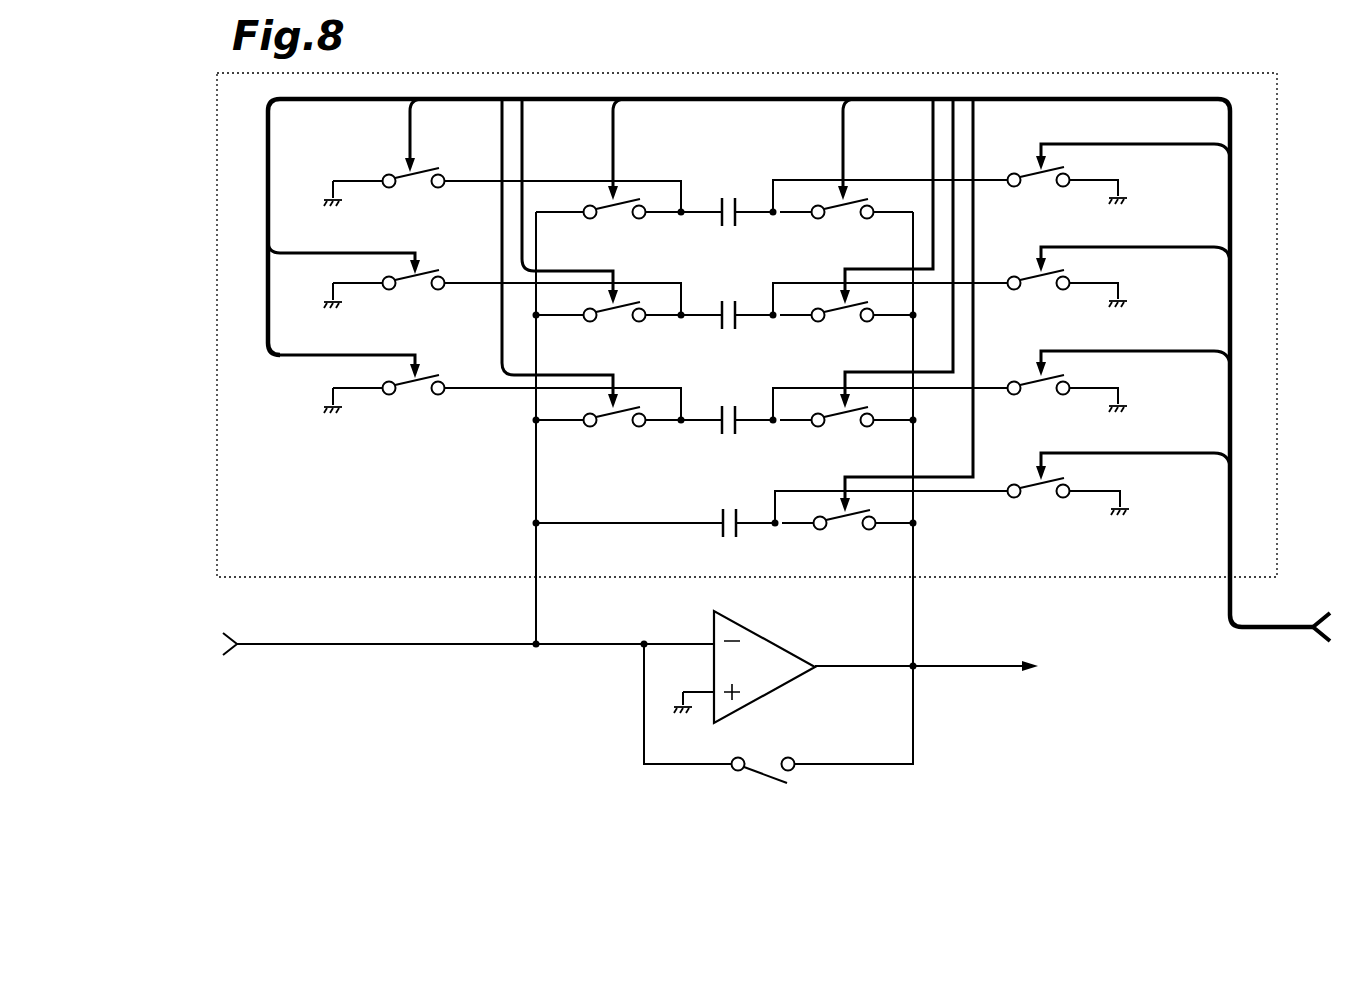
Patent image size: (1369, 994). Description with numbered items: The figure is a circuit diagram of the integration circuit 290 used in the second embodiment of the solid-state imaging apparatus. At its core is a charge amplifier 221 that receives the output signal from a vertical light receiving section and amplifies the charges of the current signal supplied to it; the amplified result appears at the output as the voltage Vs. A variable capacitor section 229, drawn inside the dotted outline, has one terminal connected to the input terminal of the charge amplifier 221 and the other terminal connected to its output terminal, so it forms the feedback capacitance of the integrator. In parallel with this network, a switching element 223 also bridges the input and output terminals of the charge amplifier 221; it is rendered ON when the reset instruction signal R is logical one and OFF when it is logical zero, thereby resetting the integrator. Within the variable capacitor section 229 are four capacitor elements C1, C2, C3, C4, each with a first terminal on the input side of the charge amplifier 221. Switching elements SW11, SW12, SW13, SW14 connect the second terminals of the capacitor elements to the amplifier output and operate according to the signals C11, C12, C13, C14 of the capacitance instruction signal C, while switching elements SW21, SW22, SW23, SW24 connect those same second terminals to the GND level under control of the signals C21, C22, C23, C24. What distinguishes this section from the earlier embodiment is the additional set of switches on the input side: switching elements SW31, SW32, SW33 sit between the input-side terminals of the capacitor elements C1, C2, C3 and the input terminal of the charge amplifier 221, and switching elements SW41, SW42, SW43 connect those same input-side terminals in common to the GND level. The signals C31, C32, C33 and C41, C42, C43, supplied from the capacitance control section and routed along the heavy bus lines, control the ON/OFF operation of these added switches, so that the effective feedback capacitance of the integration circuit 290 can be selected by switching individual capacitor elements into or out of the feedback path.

The integration circuit 290 is at (350, 806).
The variable capacitor section 229 is at (1278, 325).
The charge amplifier 221 is at (770, 672).
The switching element 223 is at (768, 694).
The reset instruction signal R is at (790, 747).
The capacitance instruction signal C is at (809, 373).
The output voltage Vs is at (941, 666).
The capacitor element C1 is at (710, 220).
The capacitor element C2 is at (710, 322).
The capacitor element C3 is at (710, 427).
The capacitor element C4 is at (711, 530).
The switching element SW11 is at (843, 224).
The switching element SW12 is at (843, 327).
The switching element SW13 is at (843, 432).
The switching element SW14 is at (845, 535).
The switching element SW21 is at (1039, 192).
The switching element SW22 is at (1039, 294).
The switching element SW23 is at (1039, 399).
The switching element SW24 is at (1039, 502).
The switching element SW31 is at (615, 224).
The switching element SW32 is at (615, 327).
The switching element SW33 is at (615, 432).
The switching element SW41 is at (414, 193).
The switching element SW42 is at (414, 294).
The switching element SW43 is at (414, 399).
The signal C11 is at (861, 149).
The signal C12 is at (886, 201).
The signal C13 is at (896, 253).
The signal C14 is at (906, 305).
The signal C21 is at (1133, 146).
The signal C22 is at (1133, 249).
The signal C23 is at (1133, 353).
The signal C24 is at (1133, 456).
The signal C31 is at (588, 149).
The signal C32 is at (570, 201).
The signal C33 is at (560, 253).
The signal C41 is at (430, 135).
The signal C42 is at (344, 259).
The signal C43 is at (350, 368).